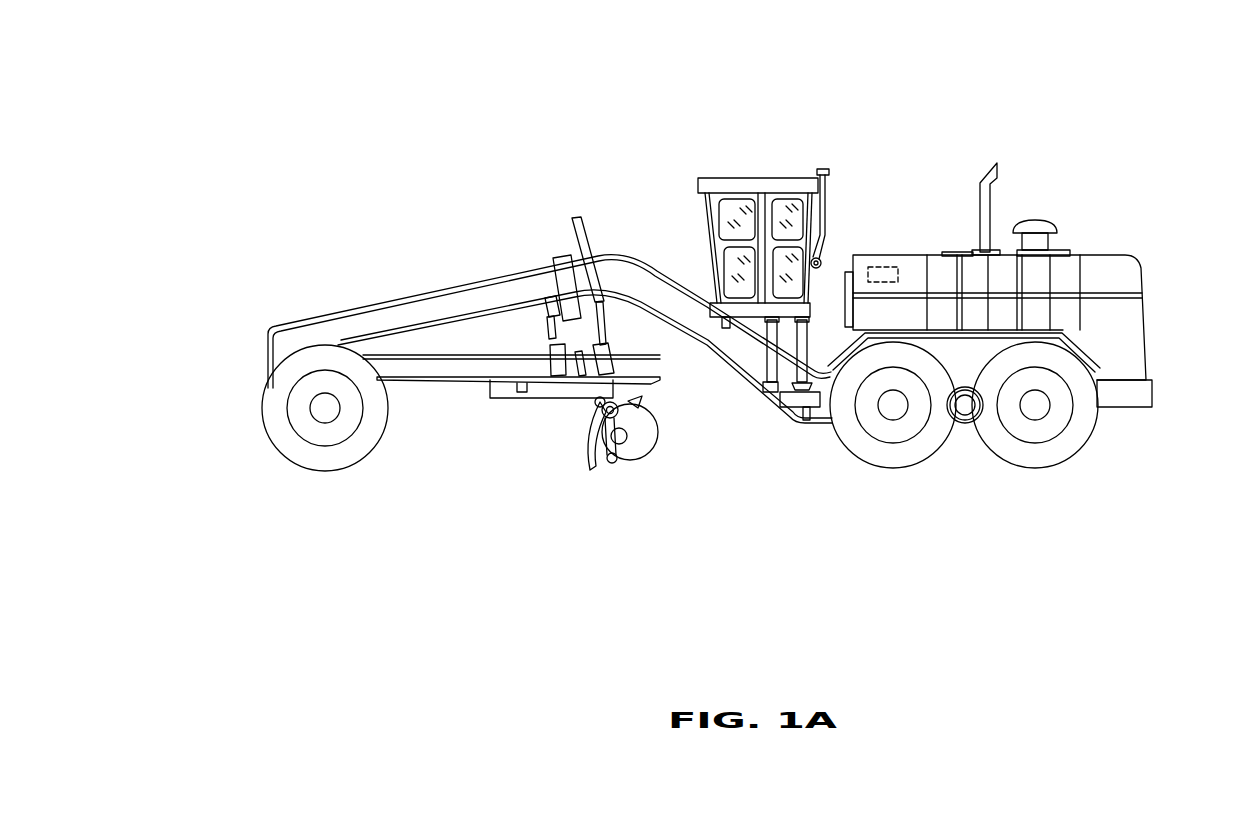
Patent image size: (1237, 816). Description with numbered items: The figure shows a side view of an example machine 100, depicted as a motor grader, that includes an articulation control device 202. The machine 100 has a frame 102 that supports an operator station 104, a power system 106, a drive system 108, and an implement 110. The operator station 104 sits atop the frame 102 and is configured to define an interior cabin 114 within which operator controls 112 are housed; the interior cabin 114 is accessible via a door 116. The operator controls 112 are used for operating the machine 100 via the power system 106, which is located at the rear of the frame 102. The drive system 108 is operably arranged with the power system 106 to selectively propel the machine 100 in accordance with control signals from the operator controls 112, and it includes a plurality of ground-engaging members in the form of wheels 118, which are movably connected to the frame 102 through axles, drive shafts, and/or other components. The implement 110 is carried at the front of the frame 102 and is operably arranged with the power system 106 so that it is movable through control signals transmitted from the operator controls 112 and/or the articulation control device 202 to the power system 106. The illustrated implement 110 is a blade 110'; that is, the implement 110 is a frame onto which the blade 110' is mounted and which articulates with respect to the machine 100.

The machine 100 is at (464, 85).
The frame 102 is at (765, 357).
The operator station 104 is at (705, 177).
The power system 106 is at (1107, 253).
The drive system 108 is at (957, 443).
The implement 110 is at (511, 416).
The blade 110' is at (604, 472).
The operator controls 112 is at (802, 198).
The interior cabin 114 is at (762, 197).
The door 116 is at (762, 197).
The wheels 118 is at (295, 460).
The articulation control device 202 is at (883, 260).